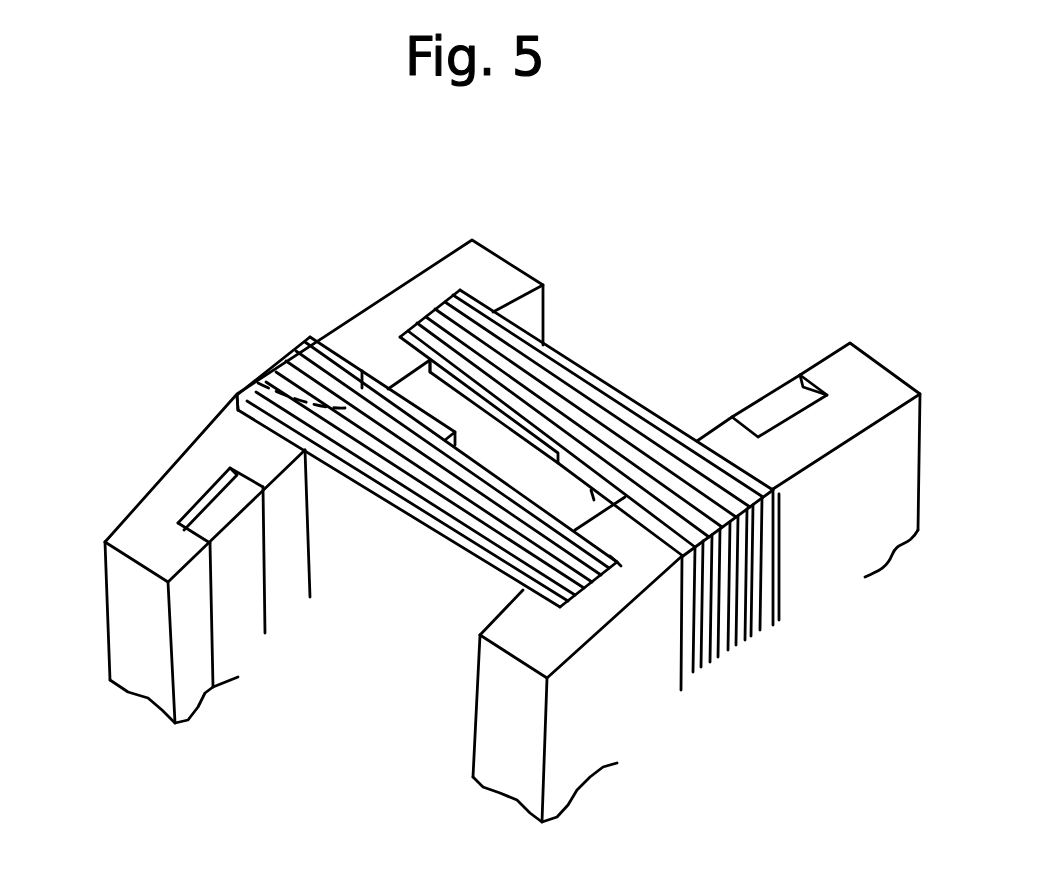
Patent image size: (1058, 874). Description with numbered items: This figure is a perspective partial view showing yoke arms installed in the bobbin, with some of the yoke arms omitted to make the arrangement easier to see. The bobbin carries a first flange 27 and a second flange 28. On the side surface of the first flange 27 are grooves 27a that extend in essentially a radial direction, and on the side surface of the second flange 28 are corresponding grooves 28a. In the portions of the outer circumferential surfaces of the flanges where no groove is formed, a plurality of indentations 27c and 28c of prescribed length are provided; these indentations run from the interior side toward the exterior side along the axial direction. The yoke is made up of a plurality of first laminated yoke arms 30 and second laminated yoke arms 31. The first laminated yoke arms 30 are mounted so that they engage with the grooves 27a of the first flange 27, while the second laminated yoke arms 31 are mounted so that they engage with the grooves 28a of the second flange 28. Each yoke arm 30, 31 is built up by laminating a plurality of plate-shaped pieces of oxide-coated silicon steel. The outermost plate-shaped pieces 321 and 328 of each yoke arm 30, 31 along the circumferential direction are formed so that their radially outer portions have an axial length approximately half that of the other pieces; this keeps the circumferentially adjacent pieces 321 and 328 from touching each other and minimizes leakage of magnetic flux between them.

The first flange 27 is at (388, 318).
The groove 27a is at (258, 383).
The indentation 27c is at (217, 515).
The second flange 28 is at (840, 378).
The groove 28a is at (752, 578).
The indentation 28c is at (763, 400).
The first laminated yoke arm 30 is at (274, 352).
The second laminated yoke arm 31 is at (560, 340).
The outermost plate-shaped piece 321 is at (237, 403).
The outermost plate-shaped piece 328 is at (311, 340).